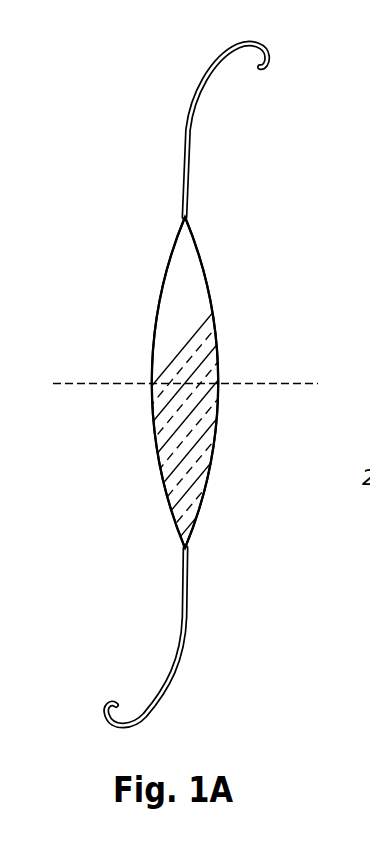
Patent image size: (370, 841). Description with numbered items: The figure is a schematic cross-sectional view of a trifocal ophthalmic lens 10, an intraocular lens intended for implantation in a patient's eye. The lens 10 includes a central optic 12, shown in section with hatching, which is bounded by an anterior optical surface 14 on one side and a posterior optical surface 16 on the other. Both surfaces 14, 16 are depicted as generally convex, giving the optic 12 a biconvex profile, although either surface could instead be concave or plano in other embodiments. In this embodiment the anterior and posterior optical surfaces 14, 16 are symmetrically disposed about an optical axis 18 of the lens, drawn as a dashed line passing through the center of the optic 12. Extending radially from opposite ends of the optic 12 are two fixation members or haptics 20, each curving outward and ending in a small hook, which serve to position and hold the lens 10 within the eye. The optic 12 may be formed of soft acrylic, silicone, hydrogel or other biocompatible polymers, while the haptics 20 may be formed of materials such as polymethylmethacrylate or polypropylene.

The trifocal ophthalmic lens 10 is at (109, 237).
The optic 12 is at (201, 236).
The anterior optical surface 14 is at (152, 437).
The posterior optical surface 16 is at (205, 280).
The optical axis 18 is at (254, 383).
The haptics 20 is at (217, 53).